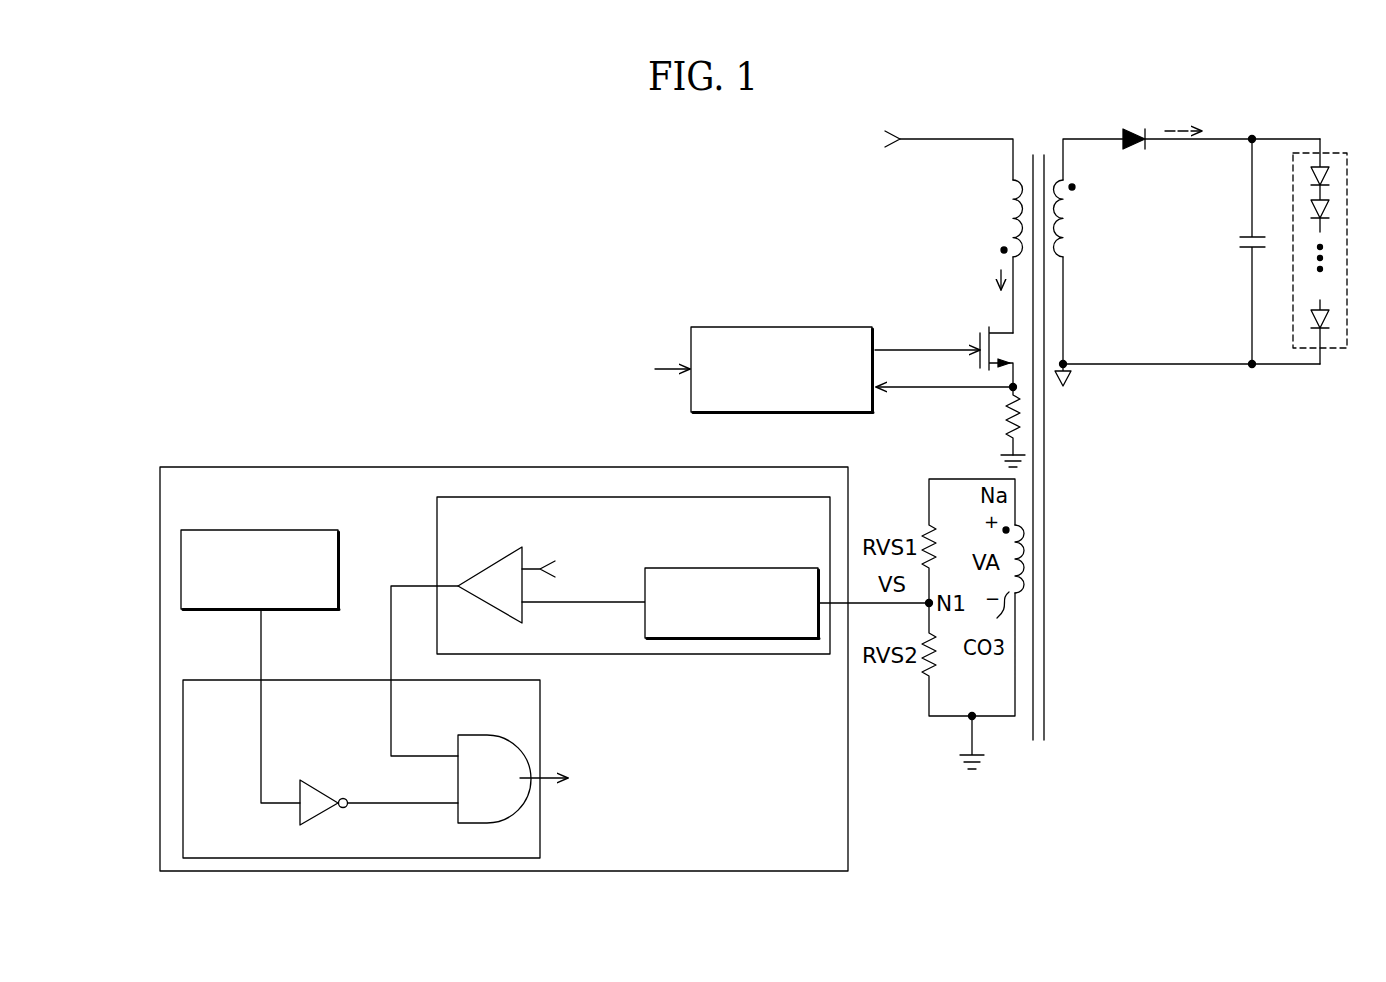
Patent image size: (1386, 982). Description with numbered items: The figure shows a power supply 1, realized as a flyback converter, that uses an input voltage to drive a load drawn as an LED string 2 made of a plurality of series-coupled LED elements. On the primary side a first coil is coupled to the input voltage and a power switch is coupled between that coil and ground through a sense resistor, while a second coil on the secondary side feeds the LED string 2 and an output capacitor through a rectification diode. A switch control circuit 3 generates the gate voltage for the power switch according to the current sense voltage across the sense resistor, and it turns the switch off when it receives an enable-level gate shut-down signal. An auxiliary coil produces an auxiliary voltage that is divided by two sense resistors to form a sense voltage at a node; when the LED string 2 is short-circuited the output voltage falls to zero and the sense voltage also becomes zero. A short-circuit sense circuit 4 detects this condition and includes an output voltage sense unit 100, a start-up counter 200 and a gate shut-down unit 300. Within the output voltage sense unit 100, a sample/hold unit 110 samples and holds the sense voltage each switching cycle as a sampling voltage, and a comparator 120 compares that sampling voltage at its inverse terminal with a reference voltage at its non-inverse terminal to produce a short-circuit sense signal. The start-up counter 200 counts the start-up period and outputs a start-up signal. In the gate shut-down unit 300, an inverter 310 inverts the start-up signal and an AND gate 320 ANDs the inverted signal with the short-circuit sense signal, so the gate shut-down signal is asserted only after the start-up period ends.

The power supply 1 is at (533, 247).
The LED string 2 is at (1347, 235).
The switch control circuit 3 is at (815, 327).
The short-circuit sense circuit 4 is at (471, 467).
The output voltage sense unit 100 is at (622, 654).
The sample/hold unit 110 is at (757, 568).
The comparator 120 is at (490, 562).
The start-up counter 200 is at (290, 530).
The gate shut-down unit 300 is at (323, 680).
The inverter 310 is at (328, 816).
The AND gate 320 is at (495, 735).